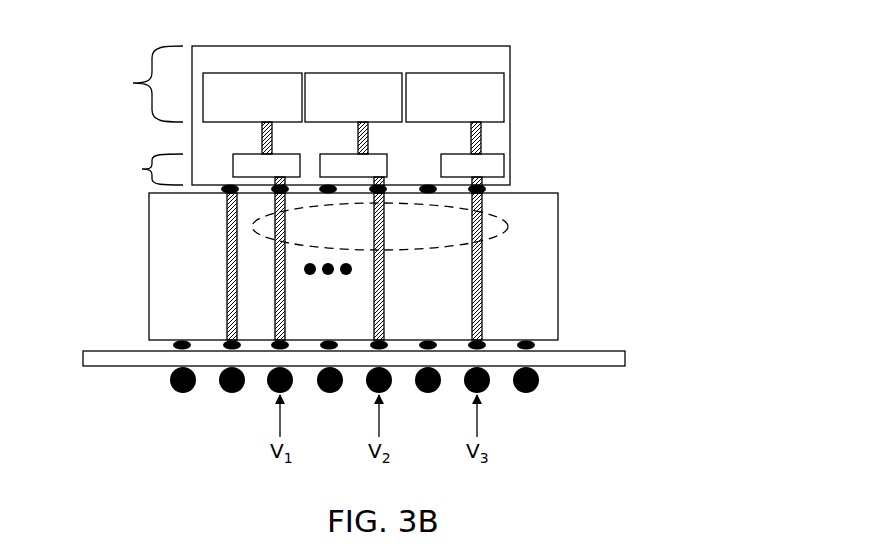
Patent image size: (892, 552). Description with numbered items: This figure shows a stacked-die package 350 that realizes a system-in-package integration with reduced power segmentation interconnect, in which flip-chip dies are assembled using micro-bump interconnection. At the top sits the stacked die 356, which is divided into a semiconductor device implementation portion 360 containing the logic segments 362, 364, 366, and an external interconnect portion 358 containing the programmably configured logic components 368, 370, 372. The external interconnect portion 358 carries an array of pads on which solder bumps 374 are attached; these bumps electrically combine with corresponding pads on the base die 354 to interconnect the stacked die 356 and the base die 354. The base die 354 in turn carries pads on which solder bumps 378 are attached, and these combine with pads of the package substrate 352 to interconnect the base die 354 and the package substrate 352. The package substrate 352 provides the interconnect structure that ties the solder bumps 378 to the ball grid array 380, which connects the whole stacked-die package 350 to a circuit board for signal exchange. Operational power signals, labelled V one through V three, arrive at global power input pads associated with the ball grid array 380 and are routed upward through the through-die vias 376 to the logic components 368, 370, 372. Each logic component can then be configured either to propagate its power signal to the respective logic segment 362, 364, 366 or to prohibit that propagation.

The stacked-die package 350 is at (664, 178).
The package substrate 352 is at (83, 353).
The base die 354 is at (149, 240).
The stacked die 356 is at (302, 46).
The external interconnect portion 358 is at (126, 169).
The semiconductor device implementation portion 360 is at (121, 84).
The logic segment 362 is at (208, 72).
The logic segment 364 is at (310, 72).
The logic segment 366 is at (412, 72).
The logic component 368 is at (233, 167).
The logic component 370 is at (320, 167).
The logic component 372 is at (441, 167).
The solder bumps 374 is at (486, 190).
The through-die vias 376 is at (506, 223).
The solder bumps 378 is at (537, 348).
The ball grid array 380 is at (539, 381).